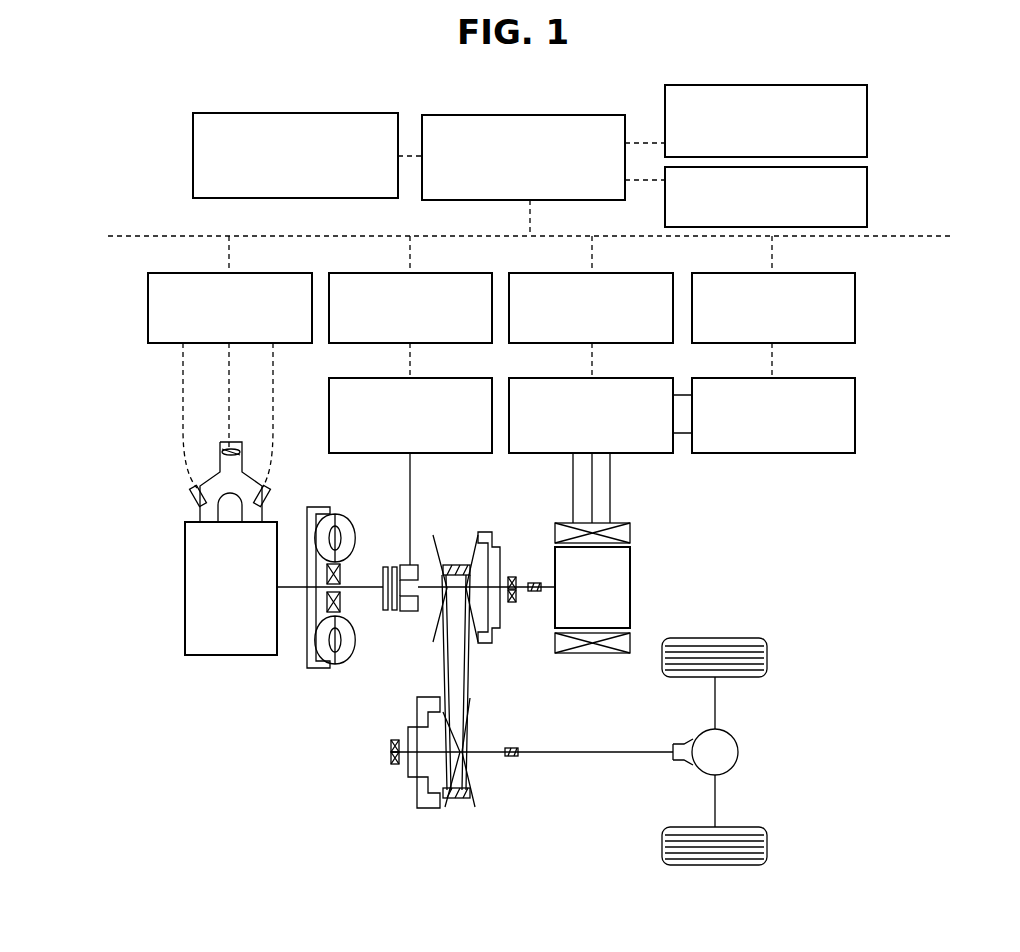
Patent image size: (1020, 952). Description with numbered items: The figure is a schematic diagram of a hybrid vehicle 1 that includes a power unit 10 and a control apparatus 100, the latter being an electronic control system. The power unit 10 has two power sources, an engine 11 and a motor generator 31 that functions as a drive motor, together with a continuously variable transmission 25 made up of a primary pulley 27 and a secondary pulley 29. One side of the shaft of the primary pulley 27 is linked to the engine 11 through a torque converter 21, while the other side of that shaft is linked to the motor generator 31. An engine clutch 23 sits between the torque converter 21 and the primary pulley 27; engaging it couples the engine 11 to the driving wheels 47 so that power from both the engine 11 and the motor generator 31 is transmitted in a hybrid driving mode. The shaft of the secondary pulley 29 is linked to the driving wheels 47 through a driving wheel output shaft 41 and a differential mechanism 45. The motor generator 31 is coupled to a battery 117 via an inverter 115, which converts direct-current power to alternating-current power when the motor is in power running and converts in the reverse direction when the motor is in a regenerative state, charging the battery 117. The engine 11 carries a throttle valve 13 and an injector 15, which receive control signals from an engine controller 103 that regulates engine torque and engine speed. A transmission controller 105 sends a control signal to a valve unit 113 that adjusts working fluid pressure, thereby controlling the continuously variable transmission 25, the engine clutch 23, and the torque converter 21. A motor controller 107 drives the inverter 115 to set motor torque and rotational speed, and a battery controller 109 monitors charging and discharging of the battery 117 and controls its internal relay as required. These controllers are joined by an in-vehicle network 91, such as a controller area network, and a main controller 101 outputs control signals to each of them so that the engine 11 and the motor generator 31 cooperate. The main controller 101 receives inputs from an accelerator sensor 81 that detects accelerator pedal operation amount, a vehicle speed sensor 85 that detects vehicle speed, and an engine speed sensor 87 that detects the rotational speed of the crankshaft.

The hybrid vehicle 1 is at (920, 650).
The power unit 10 is at (258, 739).
The engine 11 is at (228, 660).
The throttle valve 13 is at (258, 433).
The injector 15 is at (194, 493).
The torque converter 21 is at (320, 508).
The engine clutch 23 is at (398, 629).
The continuously variable transmission 25 is at (398, 804).
The primary pulley 27 is at (498, 628).
The secondary pulley 29 is at (418, 720).
The motor generator 31 is at (630, 572).
The driving wheel output shaft 41 is at (538, 750).
The differential mechanism 45 is at (740, 742).
The driving wheels 47 is at (737, 640).
The accelerator sensor 81 is at (193, 160).
The vehicle speed sensor 85 is at (867, 118).
The engine speed sensor 87 is at (867, 188).
The in-vehicle network 91 is at (130, 236).
The control apparatus 100 is at (117, 169).
The main controller 101 is at (585, 114).
The engine controller 103 is at (276, 273).
The transmission controller 105 is at (458, 273).
The motor controller 107 is at (640, 273).
The battery controller 109 is at (822, 273).
The valve unit 113 is at (458, 378).
The inverter 115 is at (640, 378).
The battery 117 is at (822, 378).